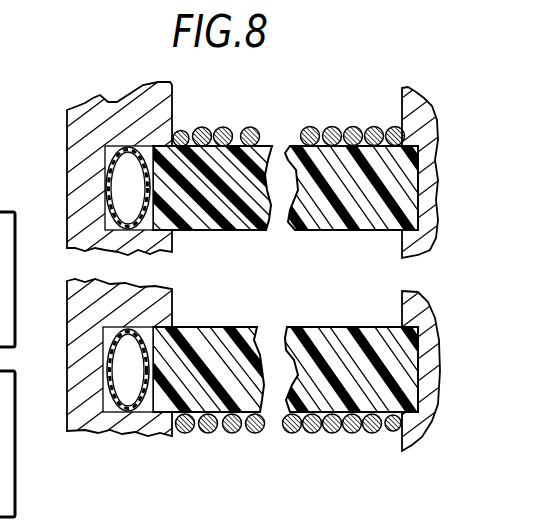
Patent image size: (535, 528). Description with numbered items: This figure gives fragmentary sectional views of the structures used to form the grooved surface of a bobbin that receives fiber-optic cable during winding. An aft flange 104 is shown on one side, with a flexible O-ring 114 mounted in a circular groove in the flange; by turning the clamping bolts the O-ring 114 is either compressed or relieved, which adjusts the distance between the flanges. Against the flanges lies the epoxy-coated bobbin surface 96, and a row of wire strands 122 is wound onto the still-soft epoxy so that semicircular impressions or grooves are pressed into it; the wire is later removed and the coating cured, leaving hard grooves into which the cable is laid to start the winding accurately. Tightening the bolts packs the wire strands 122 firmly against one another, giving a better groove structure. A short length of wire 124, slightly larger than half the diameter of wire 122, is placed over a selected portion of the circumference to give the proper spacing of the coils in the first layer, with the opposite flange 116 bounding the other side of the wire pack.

The aft flange 104 is at (113, 102).
The second housing wall 116 is at (427, 88).
The flexible O-ring 114 is at (128, 178).
The conductor strip 96 is at (208, 231).
The wire 122 is at (202, 127).
The short length of wire 124 is at (183, 131).